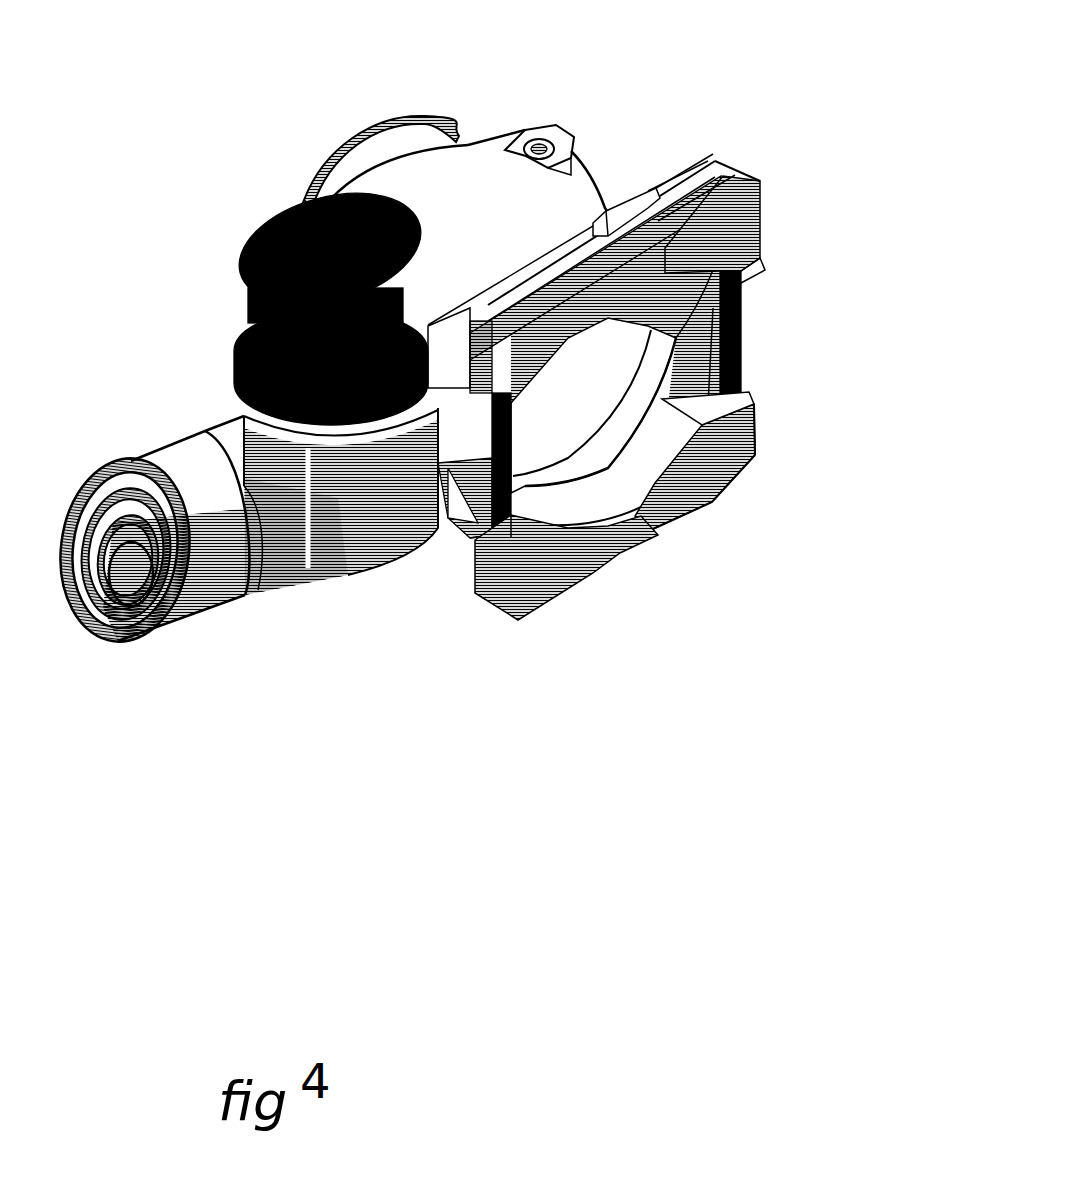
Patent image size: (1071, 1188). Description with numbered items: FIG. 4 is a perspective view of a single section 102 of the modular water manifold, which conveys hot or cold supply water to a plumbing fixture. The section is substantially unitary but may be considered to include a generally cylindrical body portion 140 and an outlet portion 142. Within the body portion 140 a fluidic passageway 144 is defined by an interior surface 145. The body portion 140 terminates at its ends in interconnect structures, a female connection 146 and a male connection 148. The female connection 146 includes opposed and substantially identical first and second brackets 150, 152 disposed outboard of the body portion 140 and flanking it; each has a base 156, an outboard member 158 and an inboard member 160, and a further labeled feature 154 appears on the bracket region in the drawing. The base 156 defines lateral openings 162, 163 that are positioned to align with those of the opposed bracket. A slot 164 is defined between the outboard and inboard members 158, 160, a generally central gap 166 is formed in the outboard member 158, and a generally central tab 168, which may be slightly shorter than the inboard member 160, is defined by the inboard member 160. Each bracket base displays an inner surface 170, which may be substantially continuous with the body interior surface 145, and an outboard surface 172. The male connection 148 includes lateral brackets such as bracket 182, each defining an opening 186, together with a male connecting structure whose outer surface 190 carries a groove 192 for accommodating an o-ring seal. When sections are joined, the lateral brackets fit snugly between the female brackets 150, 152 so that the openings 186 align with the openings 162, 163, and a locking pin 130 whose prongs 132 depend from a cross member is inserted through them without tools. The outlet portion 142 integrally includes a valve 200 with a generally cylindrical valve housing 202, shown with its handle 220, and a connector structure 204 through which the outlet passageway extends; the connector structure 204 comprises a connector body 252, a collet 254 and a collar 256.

The single section 102 is at (462, 140).
The locking pin 130 is at (733, 277).
The prong 132 is at (740, 290).
The body portion 140 is at (587, 180).
The outlet portion 142 is at (368, 578).
The fluidic passageway 144 is at (712, 300).
The interior surface 145 is at (550, 412).
The female connection 146 is at (700, 500).
The male connection 148 is at (343, 130).
The first bracket 150 is at (770, 190).
The second bracket 152 is at (748, 482).
The groove 154 is at (707, 350).
The base 156 is at (753, 230).
The outboard member 158 is at (750, 172).
The inboard member 160 is at (697, 157).
The lateral opening 162 is at (700, 380).
The lateral opening 163 is at (460, 540).
The slot 164 is at (710, 157).
The central gap 166 is at (670, 210).
The central tab 168 is at (600, 210).
The inner surface 170 is at (582, 509).
The outboard surface 172 is at (530, 600).
The lateral bracket 182 is at (563, 133).
The opening 186 is at (533, 136).
The outer surface 190 is at (395, 176).
The groove 192 is at (400, 110).
The valve 200 is at (307, 570).
The valve housing 202 is at (400, 547).
The connector structure 204 is at (118, 455).
The knob 220 is at (230, 268).
The connector body 252 is at (253, 582).
The collet 254 is at (117, 620).
The collar 256 is at (197, 613).